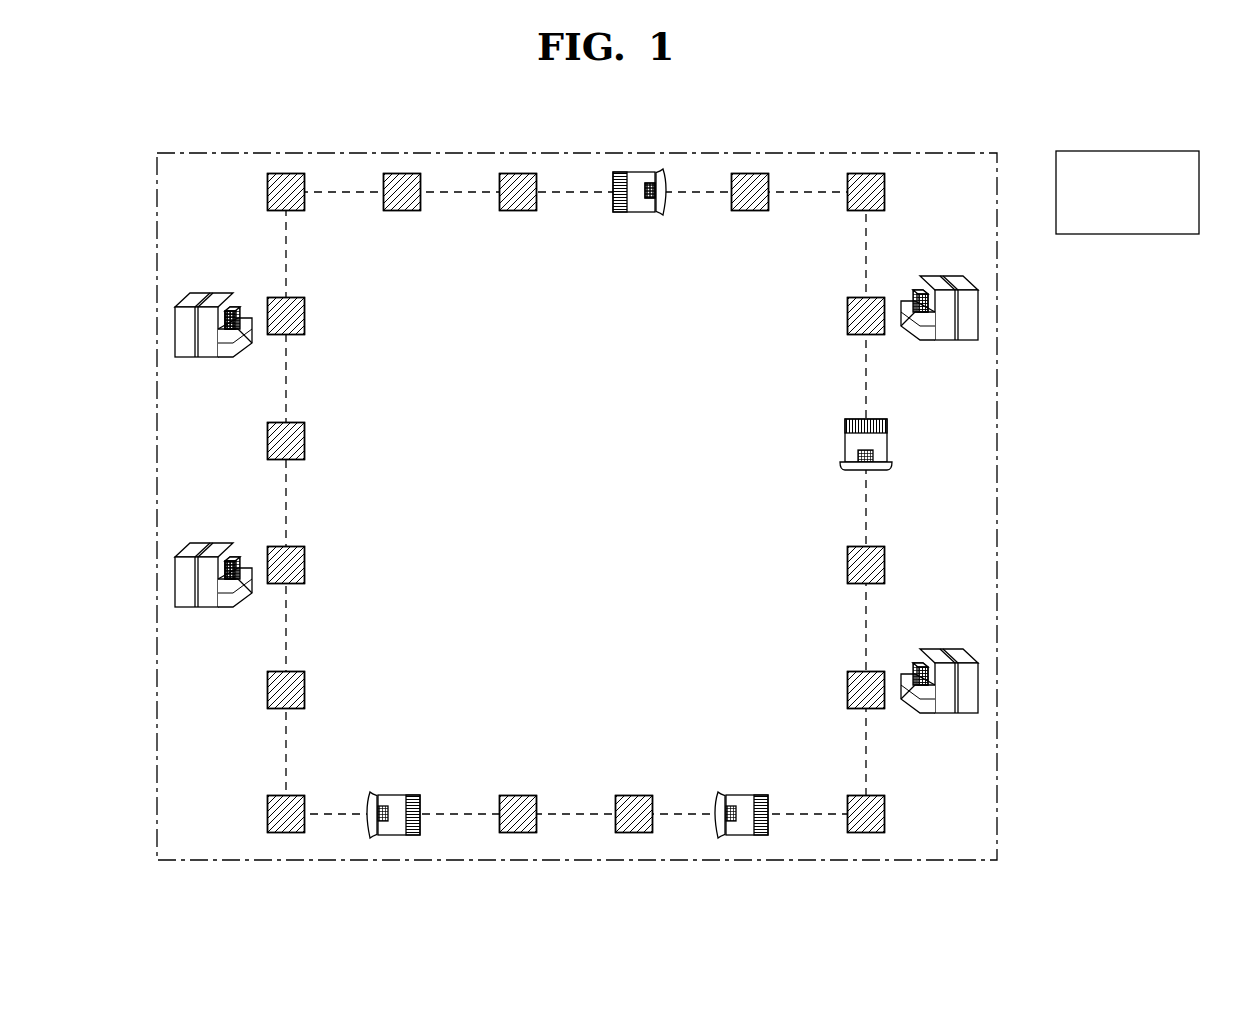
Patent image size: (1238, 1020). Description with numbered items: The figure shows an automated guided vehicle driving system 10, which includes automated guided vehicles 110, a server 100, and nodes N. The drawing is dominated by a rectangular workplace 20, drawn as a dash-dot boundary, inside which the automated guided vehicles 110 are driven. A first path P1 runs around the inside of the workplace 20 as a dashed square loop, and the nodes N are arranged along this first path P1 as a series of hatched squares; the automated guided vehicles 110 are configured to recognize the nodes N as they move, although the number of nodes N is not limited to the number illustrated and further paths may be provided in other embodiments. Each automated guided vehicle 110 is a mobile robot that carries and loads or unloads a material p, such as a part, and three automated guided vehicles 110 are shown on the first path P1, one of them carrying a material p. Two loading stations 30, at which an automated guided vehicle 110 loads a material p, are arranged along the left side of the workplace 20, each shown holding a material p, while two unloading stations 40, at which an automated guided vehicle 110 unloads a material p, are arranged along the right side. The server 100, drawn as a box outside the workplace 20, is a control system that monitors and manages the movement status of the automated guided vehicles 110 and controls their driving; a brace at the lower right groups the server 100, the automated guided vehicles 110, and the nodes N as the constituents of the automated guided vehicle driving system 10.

The automated guided vehicle driving system 10 is at (1106, 859).
The workplace 20 is at (925, 153).
The loading station 30 is at (175, 332).
The unloading station 40 is at (978, 314).
The server 100 is at (1130, 150).
The automated guided vehicle 110 is at (887, 440).
The node N is at (402, 173).
The first path P1 is at (581, 182).
The material p is at (646, 185).